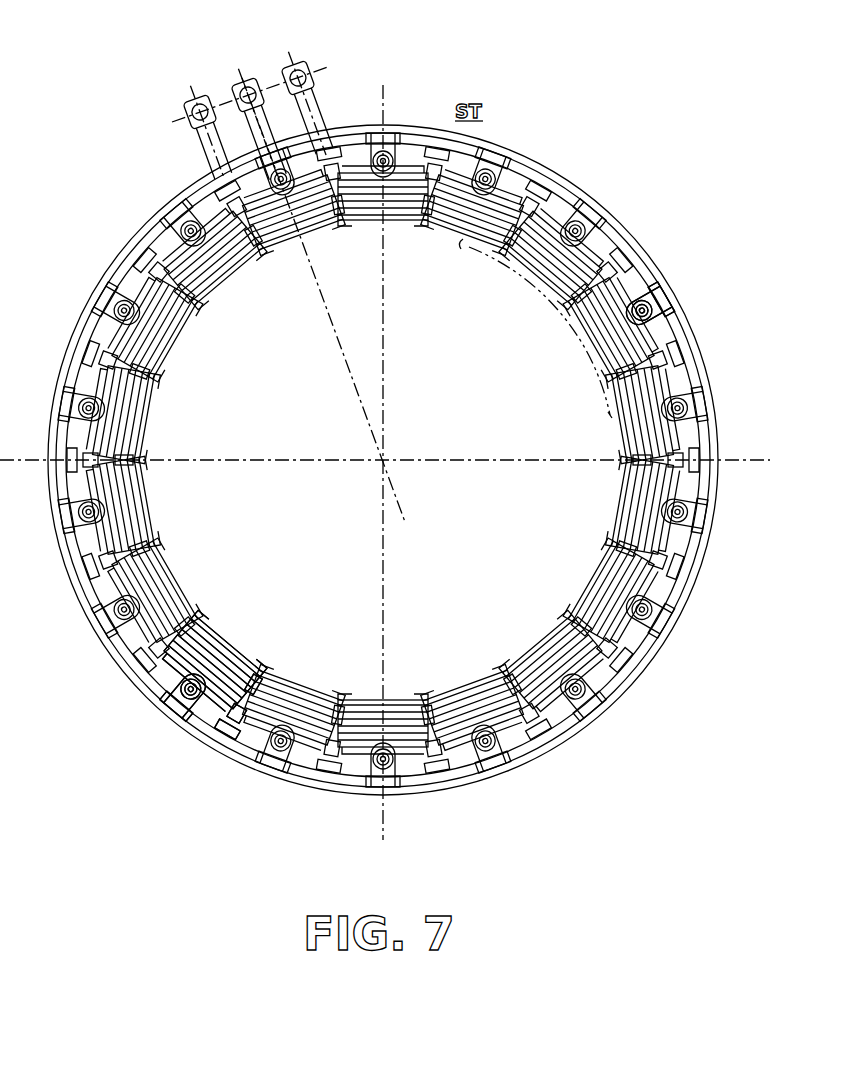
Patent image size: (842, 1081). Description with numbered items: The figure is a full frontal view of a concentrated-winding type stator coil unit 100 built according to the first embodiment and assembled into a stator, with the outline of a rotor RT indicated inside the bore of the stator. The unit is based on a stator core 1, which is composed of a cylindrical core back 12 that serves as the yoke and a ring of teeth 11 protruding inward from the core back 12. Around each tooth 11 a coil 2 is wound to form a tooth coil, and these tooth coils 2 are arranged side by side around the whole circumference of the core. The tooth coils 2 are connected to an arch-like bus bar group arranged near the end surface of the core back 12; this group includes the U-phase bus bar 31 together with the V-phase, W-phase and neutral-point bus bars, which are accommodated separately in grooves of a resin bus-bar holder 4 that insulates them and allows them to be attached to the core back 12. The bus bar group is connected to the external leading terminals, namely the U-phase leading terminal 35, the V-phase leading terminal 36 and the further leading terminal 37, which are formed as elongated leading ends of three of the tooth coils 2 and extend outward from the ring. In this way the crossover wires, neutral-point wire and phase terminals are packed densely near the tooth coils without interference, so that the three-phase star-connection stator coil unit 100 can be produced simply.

The stator core 1 is at (422, 460).
The tooth coil 2 is at (181, 586).
The bus-bar holder 4 is at (600, 210).
The tooth 11 is at (240, 663).
The core back 12 is at (700, 322).
The U-phase bus bar 31 is at (652, 671).
The U-phase leading terminal 35 is at (200, 100).
The V-phase leading terminal 36 is at (248, 84).
The V-phase leading terminal 37 is at (298, 66).
The stator coil unit 100 is at (563, 147).
The rotor RT is at (548, 305).